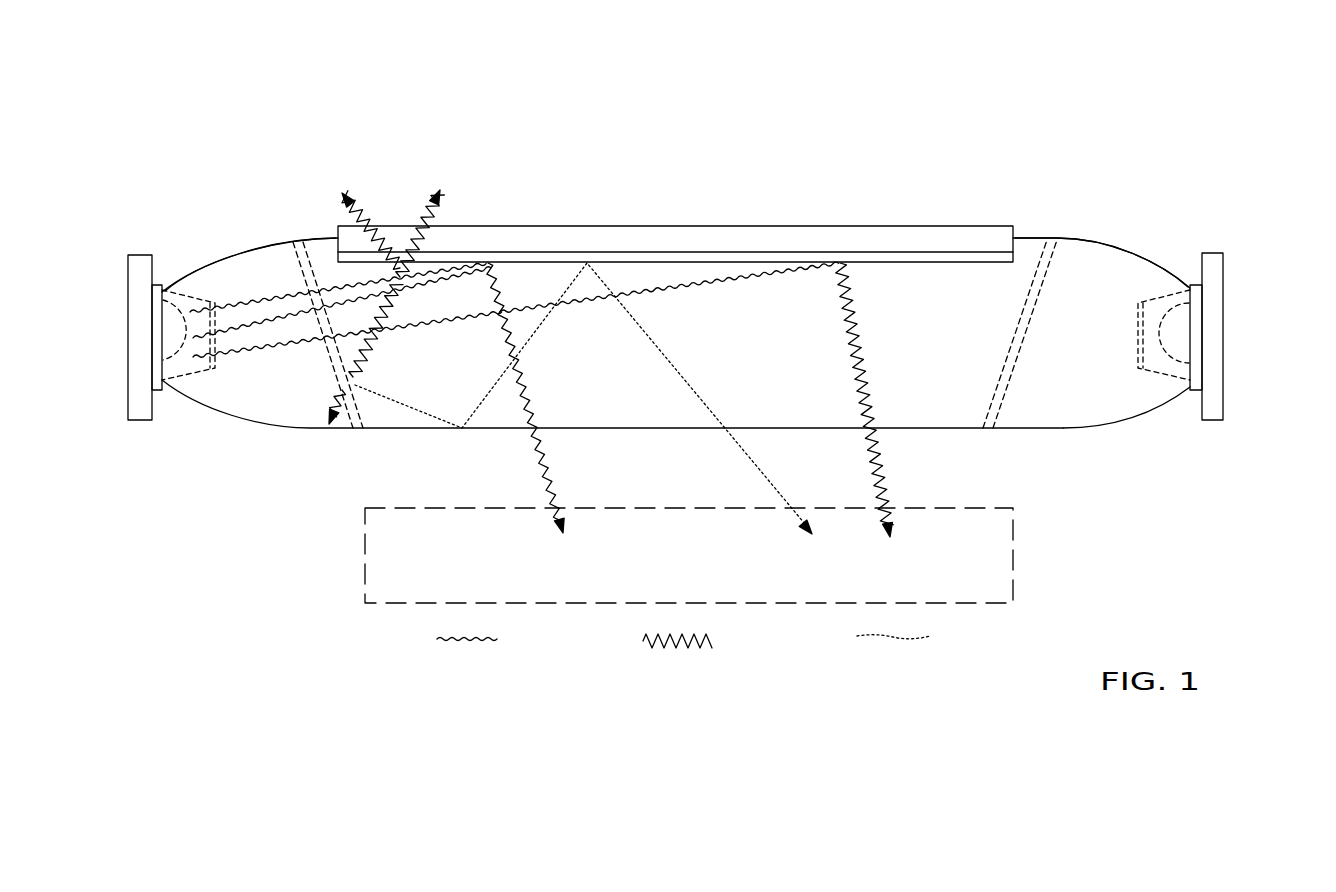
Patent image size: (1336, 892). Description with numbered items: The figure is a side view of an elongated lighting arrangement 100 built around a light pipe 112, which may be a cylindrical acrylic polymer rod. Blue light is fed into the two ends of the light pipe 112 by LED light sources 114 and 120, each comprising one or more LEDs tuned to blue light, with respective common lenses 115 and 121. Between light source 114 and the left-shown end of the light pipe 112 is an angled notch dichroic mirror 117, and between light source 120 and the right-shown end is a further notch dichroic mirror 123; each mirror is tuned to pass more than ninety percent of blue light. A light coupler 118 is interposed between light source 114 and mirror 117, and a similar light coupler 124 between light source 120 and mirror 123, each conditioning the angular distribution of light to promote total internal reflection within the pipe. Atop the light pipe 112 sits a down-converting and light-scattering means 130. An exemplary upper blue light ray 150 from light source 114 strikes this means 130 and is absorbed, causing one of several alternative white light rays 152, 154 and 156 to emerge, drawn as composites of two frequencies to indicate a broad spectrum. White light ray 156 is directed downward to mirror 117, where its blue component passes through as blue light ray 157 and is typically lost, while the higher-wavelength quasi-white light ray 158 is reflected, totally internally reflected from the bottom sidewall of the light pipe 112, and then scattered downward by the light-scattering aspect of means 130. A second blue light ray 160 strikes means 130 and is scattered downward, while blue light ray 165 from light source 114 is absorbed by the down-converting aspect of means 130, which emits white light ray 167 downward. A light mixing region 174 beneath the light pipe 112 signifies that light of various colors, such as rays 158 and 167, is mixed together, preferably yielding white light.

The elongated lighting arrangement 100 is at (537, 203).
The light pipe 112 is at (735, 318).
The LED light source 114 is at (119, 288).
The common lens 115 is at (180, 381).
The notch dichroic mirror 117 is at (296, 252).
The light coupler 118 is at (233, 270).
The LED light source 120 is at (1243, 336).
The common lens 121 is at (1152, 373).
The notch dichroic mirror 123 is at (1042, 297).
The light coupler 124 is at (1122, 277).
The down-converting and light-scattering means 130 is at (594, 226).
The blue light ray 150 is at (260, 297).
The white light ray 152 is at (348, 216).
The white light ray 154 is at (438, 214).
The white light ray 156 is at (361, 368).
The blue light ray 157 is at (335, 402).
The quasi-white light ray 158 is at (430, 415).
The blue light ray 160 is at (282, 347).
The blue light ray 165 is at (583, 303).
The white light ray 167 is at (853, 352).
The light mixing region 174 is at (689, 555).